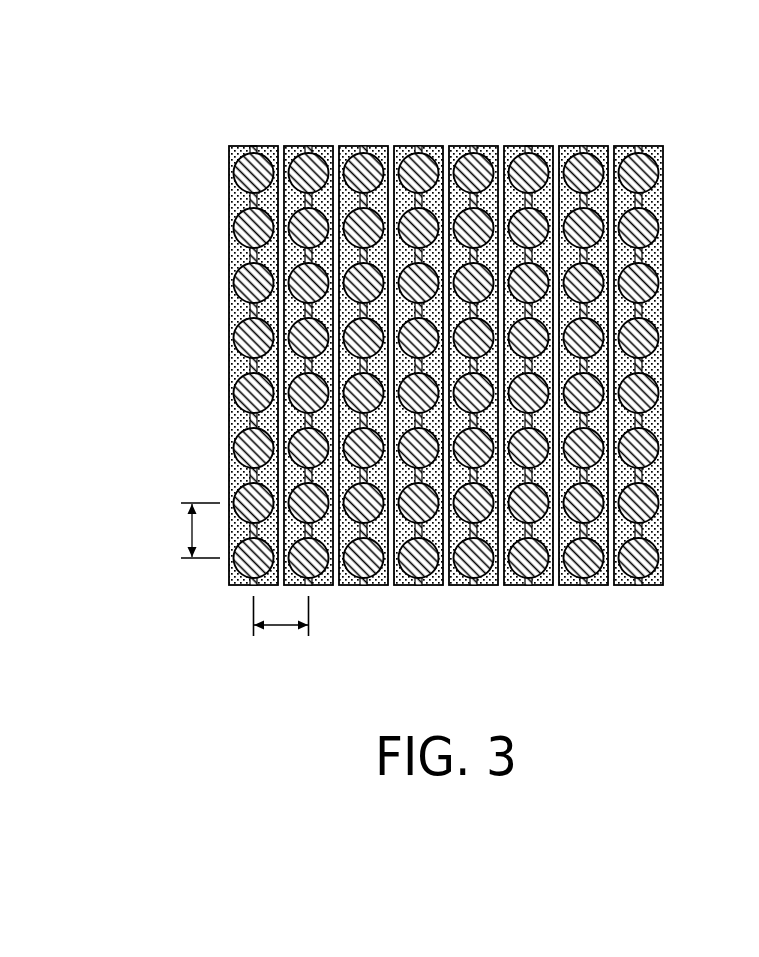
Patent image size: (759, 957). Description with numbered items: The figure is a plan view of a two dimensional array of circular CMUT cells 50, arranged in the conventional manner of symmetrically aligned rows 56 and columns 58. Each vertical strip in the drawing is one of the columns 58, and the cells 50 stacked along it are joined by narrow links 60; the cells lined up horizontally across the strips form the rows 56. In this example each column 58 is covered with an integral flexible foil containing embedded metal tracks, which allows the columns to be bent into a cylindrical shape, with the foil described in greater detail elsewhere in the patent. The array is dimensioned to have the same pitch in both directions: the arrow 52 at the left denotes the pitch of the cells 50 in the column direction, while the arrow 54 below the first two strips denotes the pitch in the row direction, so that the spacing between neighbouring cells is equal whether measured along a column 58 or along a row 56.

The circular CMUT cells 50 is at (233, 173).
The arrow denoting pitch in the column direction 52 is at (190, 529).
The arrow denoting pitch in the row direction 54 is at (281, 627).
The rows 56 is at (670, 338).
The columns 58 is at (254, 144).
The interconnect trace 60 is at (650, 197).